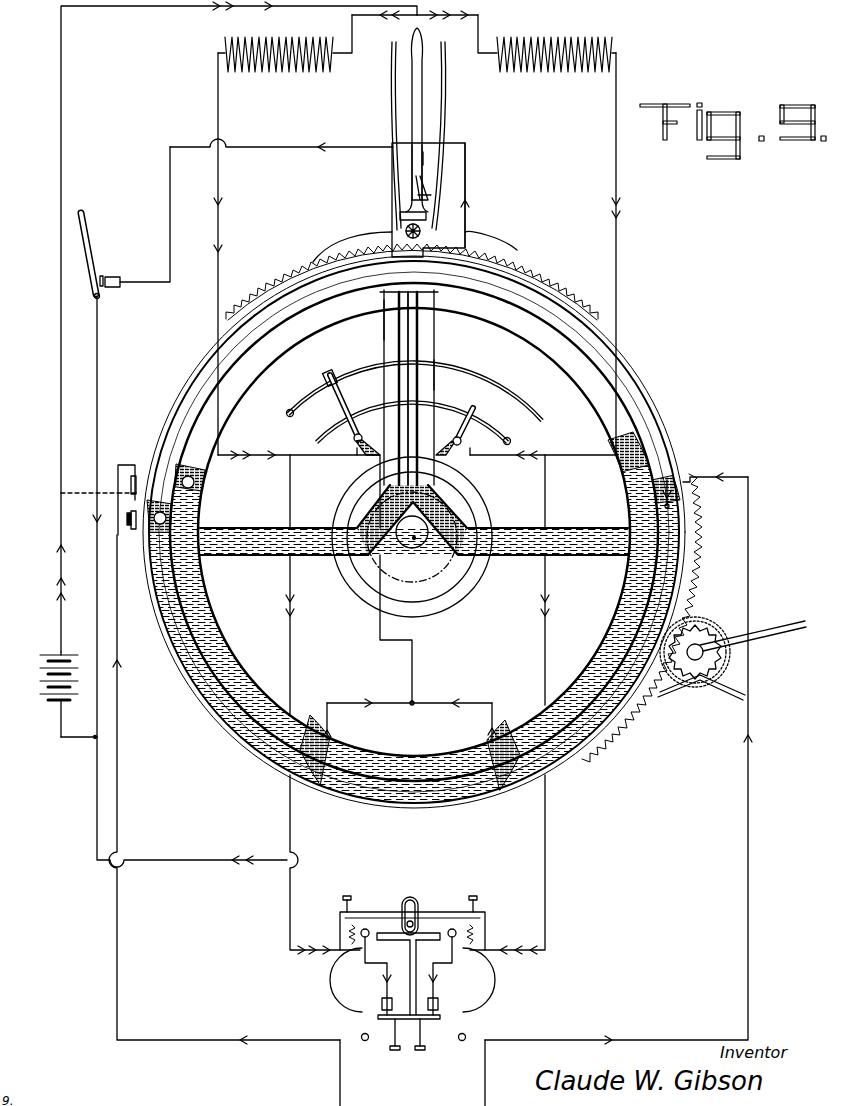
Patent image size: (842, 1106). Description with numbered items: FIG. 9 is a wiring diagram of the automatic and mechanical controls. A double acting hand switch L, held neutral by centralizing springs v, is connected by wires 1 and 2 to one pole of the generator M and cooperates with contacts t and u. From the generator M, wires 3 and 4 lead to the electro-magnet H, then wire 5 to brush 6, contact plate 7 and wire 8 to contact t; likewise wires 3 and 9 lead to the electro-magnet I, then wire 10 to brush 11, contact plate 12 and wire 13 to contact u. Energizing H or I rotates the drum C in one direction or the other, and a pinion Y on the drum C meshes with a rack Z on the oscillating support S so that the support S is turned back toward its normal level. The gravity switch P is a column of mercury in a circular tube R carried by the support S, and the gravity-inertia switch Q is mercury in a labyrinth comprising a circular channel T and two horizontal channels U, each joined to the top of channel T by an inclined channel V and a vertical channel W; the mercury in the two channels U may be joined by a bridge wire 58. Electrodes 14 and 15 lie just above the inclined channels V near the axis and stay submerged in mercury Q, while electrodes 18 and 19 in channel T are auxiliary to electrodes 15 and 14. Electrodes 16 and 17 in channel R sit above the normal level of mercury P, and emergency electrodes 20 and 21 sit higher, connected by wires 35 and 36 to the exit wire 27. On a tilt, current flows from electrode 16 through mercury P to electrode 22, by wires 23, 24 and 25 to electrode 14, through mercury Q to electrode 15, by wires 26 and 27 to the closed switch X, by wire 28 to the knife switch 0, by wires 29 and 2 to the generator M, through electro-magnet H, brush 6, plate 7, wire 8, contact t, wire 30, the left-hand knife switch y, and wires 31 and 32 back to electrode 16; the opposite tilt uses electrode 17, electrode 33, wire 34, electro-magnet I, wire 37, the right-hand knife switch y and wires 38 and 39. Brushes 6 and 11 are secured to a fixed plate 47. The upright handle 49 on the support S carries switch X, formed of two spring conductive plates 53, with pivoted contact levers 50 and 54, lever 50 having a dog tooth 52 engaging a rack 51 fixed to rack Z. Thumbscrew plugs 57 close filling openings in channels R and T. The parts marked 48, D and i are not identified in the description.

The knife switch 0 is at (88, 264).
The wire 1 is at (205, 866).
The wire 2 is at (58, 748).
The wire 3 is at (172, 9).
The wire 4 is at (384, 32).
The wire 5 is at (224, 236).
The brush 6 is at (340, 402).
The contact plate 7 is at (308, 396).
The wire 8 is at (291, 660).
The wire 9 is at (464, 25).
The wire 10 is at (620, 286).
The brush 11 is at (480, 418).
The contact plate 12 is at (445, 410).
The wire 13 is at (545, 672).
The electrode 14 is at (398, 488).
The electrode 15 is at (440, 493).
The electrode 16 is at (98, 500).
The electrode 17 is at (672, 505).
The electrode 18 is at (192, 470).
The electrode 19 is at (640, 468).
The emergency electrode 20 is at (178, 428).
The emergency electrode 21 is at (646, 432).
The electrode 22 is at (337, 780).
The wire 23 is at (333, 703).
The conduit wire 24 is at (380, 616).
The wire 25 is at (398, 322).
The wire 26 is at (432, 372).
The exit wire 27 is at (468, 212).
The wire 28 is at (250, 148).
The wire 29 is at (100, 348).
The wire 30 is at (355, 972).
The wire 31 is at (370, 1049).
The wire 32 is at (119, 672).
The electrode 33 is at (488, 780).
The wire 34 is at (492, 706).
The conduit wire 35 is at (280, 268).
The conduit wire 36 is at (562, 312).
The wire 37 is at (472, 965).
The wire 38 is at (440, 1049).
The wire 39 is at (748, 520).
The fixed plate 47 is at (440, 572).
The conductor 48 is at (428, 604).
The upright handle 49 is at (416, 72).
The contact lever 50 is at (394, 106).
The rack 51 is at (246, 300).
The dog tooth 52 is at (398, 233).
The spring conductive plates 53 is at (432, 190).
The contact lever 54 is at (443, 95).
The thumbscrew plug 57 is at (130, 522).
The bridge wire 58 is at (440, 553).
The electro-magnet H is at (250, 72).
The electro-magnet I is at (538, 72).
The switch X is at (408, 172).
The circular channel T is at (516, 370).
The vertical channel W is at (418, 333).
The circular tube R is at (626, 388).
The horizontal channel U is at (242, 556).
The inclined channel V is at (368, 530).
The rack Z is at (414, 548).
The drum C is at (705, 636).
The pinion Y is at (745, 668).
The arm D is at (665, 694).
The oscillating support S is at (436, 671).
The gravity switch P is at (414, 532).
The gravity-inertia switch Q is at (272, 681).
The hand switch L is at (432, 918).
The electric generator M is at (46, 664).
The arm i is at (800, 622).
The centralizing springs v is at (350, 930).
The contact t is at (365, 962).
The contact u is at (452, 962).
The knife switch y is at (382, 1004).